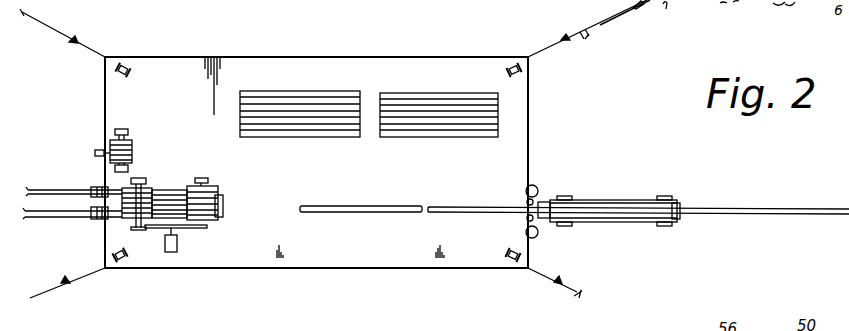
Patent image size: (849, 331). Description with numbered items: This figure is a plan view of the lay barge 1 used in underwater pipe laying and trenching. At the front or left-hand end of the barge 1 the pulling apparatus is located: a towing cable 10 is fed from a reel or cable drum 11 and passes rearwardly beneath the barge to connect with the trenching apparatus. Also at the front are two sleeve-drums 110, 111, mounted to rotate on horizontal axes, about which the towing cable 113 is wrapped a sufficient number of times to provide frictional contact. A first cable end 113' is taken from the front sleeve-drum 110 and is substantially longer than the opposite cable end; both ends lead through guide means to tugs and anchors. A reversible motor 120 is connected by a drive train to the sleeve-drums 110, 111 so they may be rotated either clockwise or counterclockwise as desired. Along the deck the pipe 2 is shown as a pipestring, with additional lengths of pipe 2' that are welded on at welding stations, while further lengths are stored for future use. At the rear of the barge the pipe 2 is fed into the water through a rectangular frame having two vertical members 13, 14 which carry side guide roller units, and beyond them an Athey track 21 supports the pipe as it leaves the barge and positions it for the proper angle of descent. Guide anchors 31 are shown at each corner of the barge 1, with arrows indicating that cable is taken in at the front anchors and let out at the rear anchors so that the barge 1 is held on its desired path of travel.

The lay barge 1 is at (330, 250).
The pipe 2 is at (638, 186).
The additional lengths of pipe 2' is at (361, 183).
The towing cable 10 is at (95, 153).
The reel or cable drum 11 is at (110, 143).
The vertical member 13 is at (536, 186).
The vertical member 14 is at (538, 235).
The Athey track 21 is at (632, 205).
The guide anchors 31 is at (76, 37).
The front sleeve-drum 110 is at (152, 186).
The sleeve-drum 111 is at (213, 182).
The towing cable 113 is at (182, 178).
The first cable end 113' is at (72, 231).
The reversible motor 120 is at (178, 244).